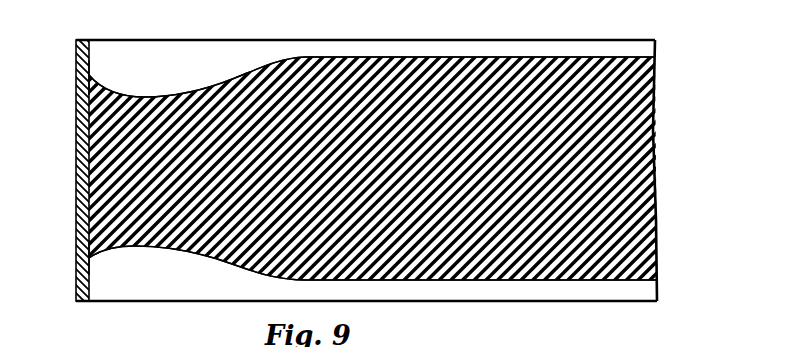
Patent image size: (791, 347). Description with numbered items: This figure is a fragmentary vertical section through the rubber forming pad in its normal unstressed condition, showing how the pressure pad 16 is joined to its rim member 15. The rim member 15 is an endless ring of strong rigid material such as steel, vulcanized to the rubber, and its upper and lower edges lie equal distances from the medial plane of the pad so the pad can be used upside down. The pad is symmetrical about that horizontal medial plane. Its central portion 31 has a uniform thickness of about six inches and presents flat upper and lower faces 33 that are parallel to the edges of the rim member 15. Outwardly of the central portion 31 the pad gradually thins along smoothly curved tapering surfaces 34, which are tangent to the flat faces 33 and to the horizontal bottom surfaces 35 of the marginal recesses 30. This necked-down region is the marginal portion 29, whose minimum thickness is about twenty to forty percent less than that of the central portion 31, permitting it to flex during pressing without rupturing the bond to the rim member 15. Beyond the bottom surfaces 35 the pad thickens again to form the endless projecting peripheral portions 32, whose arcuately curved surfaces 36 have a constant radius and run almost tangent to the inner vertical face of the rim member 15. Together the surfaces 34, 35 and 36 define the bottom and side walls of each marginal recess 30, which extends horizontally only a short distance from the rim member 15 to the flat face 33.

The rim member 15 is at (76, 211).
The pressure pad 16 is at (543, 57).
The marginal portion 29 is at (156, 166).
The marginal recess 30 is at (162, 72).
The central portion 31 is at (527, 209).
The projecting peripheral portion 32 is at (88, 83).
The flat upper and lower faces 33 is at (412, 57).
The tapering surface 34 is at (232, 74).
The horizontal bottom surface 35 is at (160, 95).
The arcuately curved surface 36 is at (104, 88).